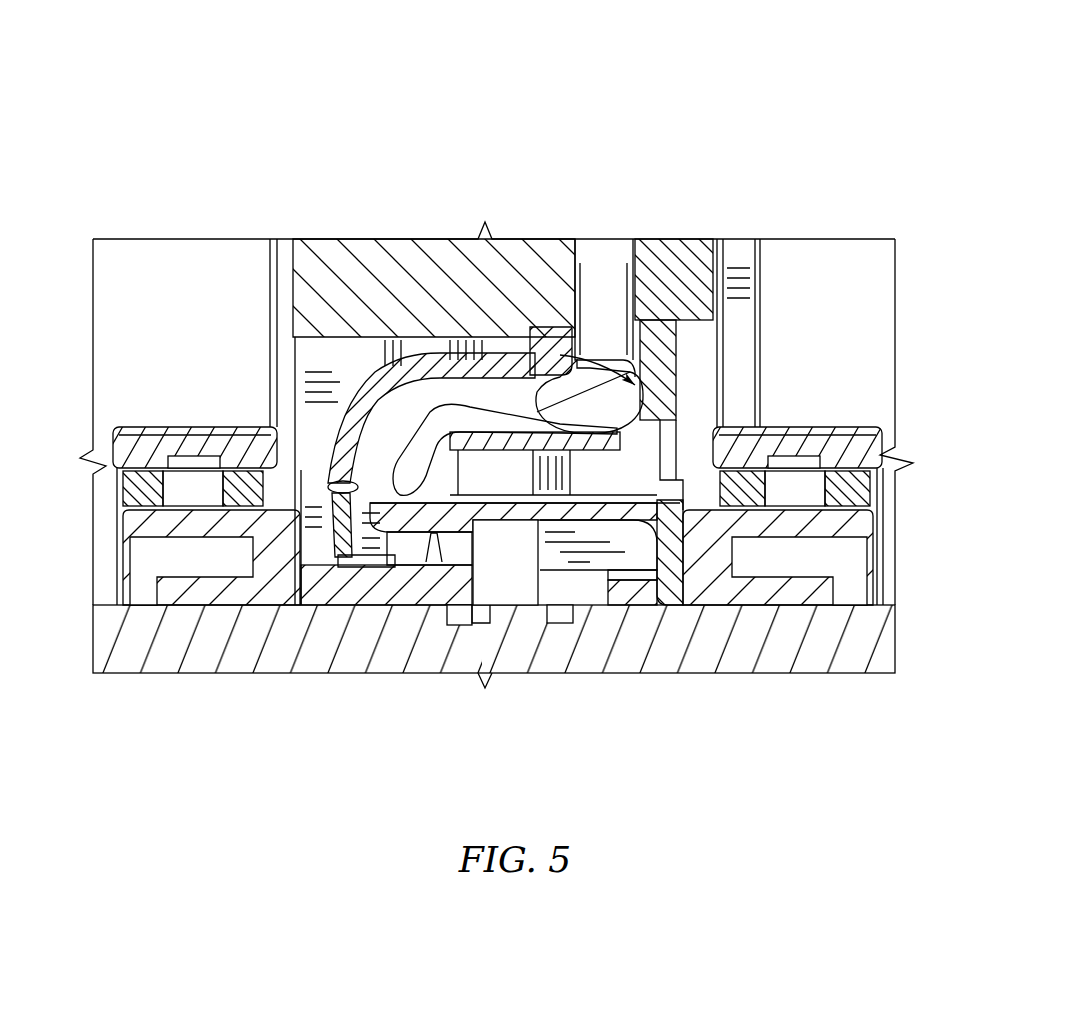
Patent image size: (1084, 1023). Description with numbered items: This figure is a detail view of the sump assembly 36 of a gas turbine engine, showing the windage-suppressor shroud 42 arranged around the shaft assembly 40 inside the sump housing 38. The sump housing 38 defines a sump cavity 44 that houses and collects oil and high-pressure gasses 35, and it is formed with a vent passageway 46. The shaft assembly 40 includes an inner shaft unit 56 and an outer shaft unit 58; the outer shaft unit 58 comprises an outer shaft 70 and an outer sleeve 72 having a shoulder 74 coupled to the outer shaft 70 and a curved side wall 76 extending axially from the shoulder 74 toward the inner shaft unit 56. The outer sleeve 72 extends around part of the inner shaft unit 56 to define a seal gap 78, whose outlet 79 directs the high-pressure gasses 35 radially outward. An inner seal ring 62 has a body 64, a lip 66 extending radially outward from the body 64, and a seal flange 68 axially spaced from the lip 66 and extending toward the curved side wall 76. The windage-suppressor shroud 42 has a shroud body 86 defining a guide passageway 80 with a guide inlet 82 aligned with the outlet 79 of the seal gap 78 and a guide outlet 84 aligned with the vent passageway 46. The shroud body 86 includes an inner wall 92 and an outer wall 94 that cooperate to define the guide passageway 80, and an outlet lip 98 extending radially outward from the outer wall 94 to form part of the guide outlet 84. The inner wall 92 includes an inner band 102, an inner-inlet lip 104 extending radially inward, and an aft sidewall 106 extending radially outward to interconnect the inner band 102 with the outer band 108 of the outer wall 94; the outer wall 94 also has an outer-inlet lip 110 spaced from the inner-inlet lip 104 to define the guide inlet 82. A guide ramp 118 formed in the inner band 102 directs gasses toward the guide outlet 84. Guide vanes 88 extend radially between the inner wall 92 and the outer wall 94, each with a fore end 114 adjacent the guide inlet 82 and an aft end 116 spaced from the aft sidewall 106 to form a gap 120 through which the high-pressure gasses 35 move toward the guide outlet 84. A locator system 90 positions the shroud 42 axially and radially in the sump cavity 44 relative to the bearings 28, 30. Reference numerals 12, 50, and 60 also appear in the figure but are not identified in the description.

The clutch assembly 12 is at (672, 40).
The sump assembly 36 is at (675, 108).
The sump housing 38 is at (330, 239).
The outer wall 94 is at (413, 353).
The outer band 108 is at (437, 335).
The guide vanes 88 is at (493, 403).
The channel 50 is at (590, 239).
The vent passageway 46 is at (605, 239).
The outlet lip 98 is at (683, 353).
The aft sidewall 106 is at (677, 390).
The guide outlet 84 is at (632, 336).
The shroud body 86 is at (357, 377).
The windage-suppressor shroud 42 is at (337, 400).
The outer-inlet lip 110 is at (463, 408).
The sump cavity 44 is at (280, 395).
The fore end 114 is at (357, 453).
The bearing 28 is at (110, 430).
The guide inlet 82 is at (265, 455).
The inner shaft unit 56 is at (110, 600).
The bearing 30 is at (885, 430).
The shaft assembly 40 is at (880, 555).
The outer shaft unit 58 is at (885, 605).
The seal flange 68 is at (355, 565).
The inner seal ring 62 is at (437, 650).
The body 64 is at (427, 607).
The seal gap 78 is at (400, 548).
The locator system 90 is at (310, 543).
The lip 66 is at (492, 627).
The guide passageway 80 is at (425, 483).
The outlet 79 is at (555, 553).
The inner wall 92 is at (560, 562).
The inner-inlet lip 104 is at (532, 456).
The inner band 102 is at (608, 513).
The high-pressure gasses 35 is at (587, 578).
The curved side wall 76 is at (580, 555).
The outer sleeve 72 is at (690, 548).
The shoulder 74 is at (667, 573).
The guide ramp 118 is at (668, 398).
The aft end 116 is at (603, 400).
The gap 120 is at (617, 407).
The first shaft 60 is at (118, 648).
The outer shaft 70 is at (857, 650).